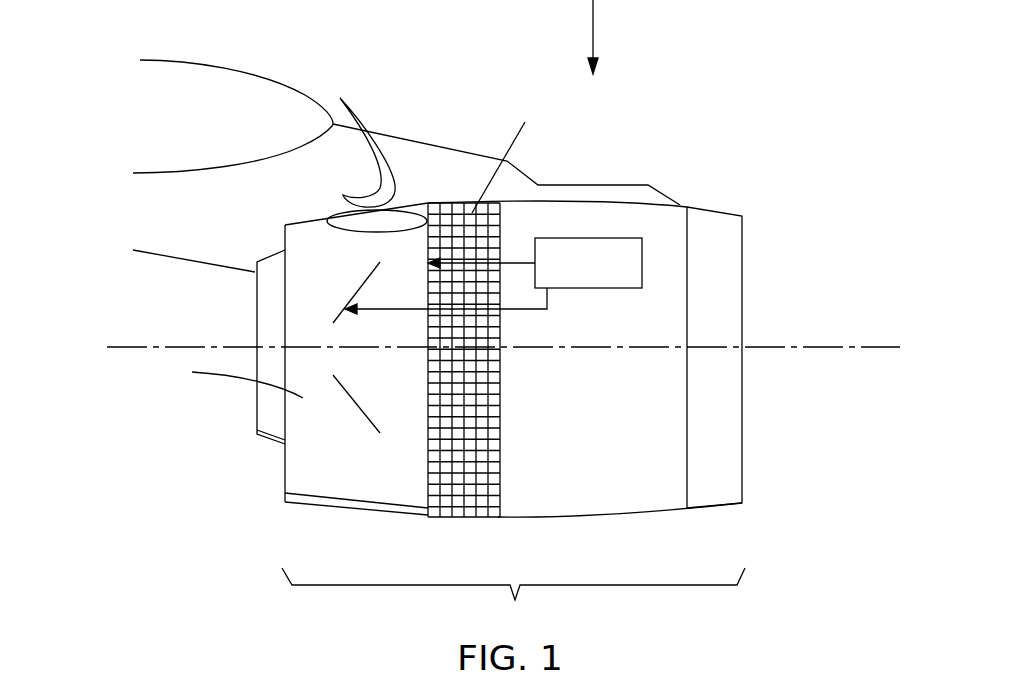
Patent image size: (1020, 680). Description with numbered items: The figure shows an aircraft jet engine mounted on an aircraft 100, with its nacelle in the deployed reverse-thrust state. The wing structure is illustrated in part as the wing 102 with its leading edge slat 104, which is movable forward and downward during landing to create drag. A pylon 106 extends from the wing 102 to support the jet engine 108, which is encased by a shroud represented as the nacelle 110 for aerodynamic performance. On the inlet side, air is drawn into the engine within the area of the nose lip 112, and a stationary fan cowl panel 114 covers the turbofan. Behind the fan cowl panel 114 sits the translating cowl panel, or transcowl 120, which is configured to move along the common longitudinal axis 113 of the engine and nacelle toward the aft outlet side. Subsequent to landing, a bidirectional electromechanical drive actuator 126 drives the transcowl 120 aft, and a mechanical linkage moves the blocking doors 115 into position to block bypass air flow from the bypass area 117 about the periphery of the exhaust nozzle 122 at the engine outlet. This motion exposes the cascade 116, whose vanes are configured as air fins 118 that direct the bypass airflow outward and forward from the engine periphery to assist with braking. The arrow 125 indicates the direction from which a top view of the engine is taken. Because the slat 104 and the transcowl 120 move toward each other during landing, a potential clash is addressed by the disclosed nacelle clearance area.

The aircraft 100 is at (436, 70).
The wing 102 is at (267, 69).
The leading edge slat 104 is at (392, 160).
The pylon 106 is at (623, 185).
The jet engine 108 is at (695, 527).
The nacelle 110 is at (513, 601).
The nose lip 112 is at (742, 452).
The longitudinal axis 113 is at (780, 347).
The fan cowl panel 114 is at (602, 518).
The blocking doors 115 is at (357, 295).
The cascade 116 is at (462, 518).
The bypass area 117 is at (270, 440).
The air fins 118 is at (477, 410).
The transcowl 120 is at (355, 507).
The exhaust nozzle 122 is at (255, 420).
The arrow 125 is at (593, 20).
The drive actuator 126 is at (607, 288).